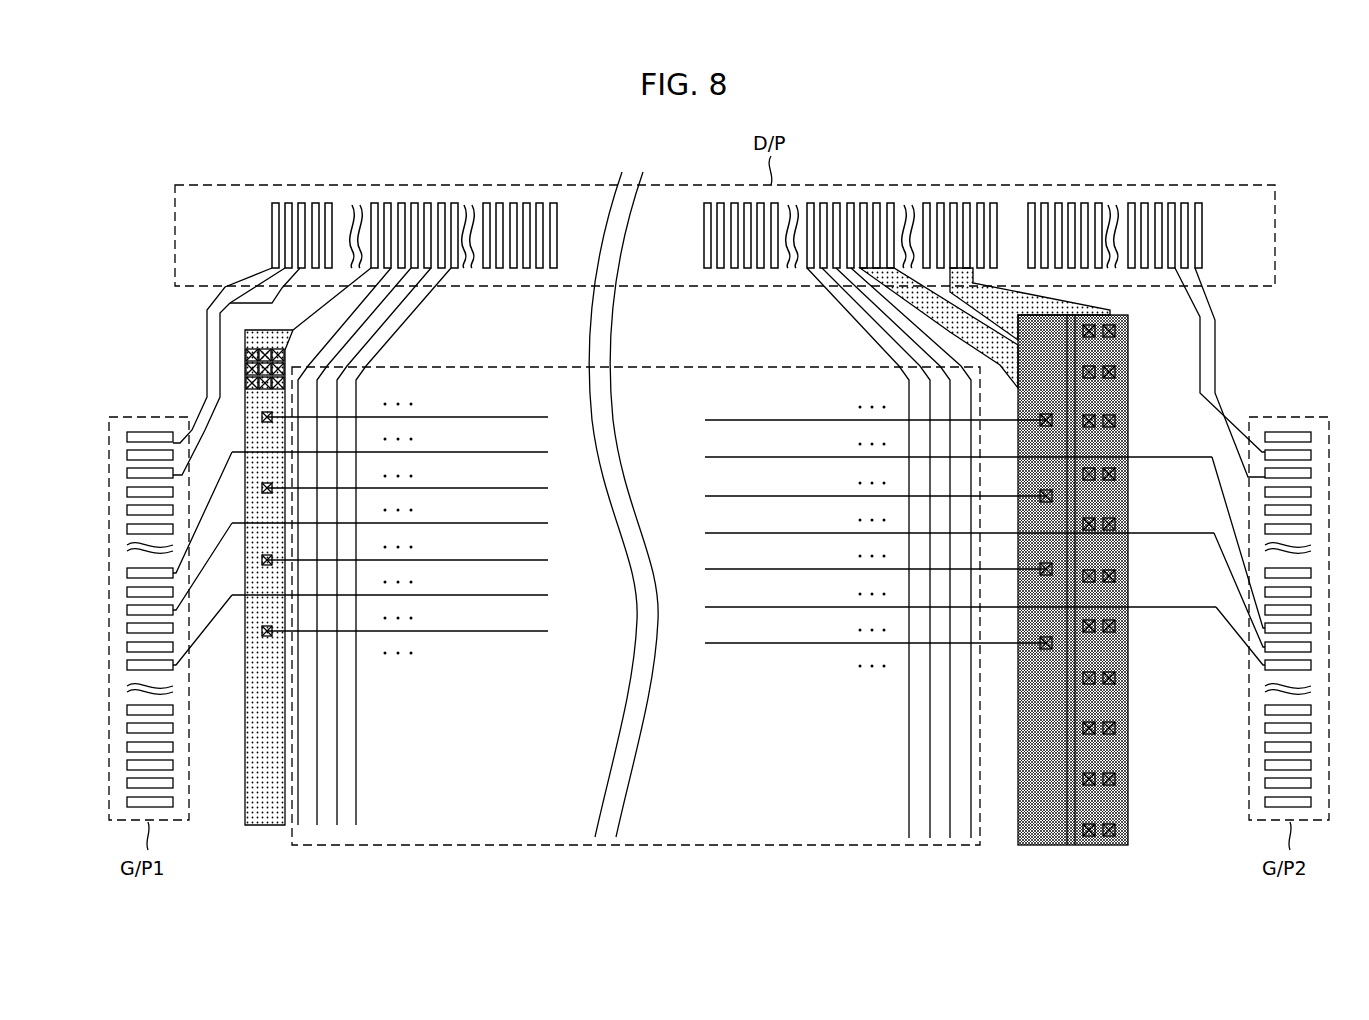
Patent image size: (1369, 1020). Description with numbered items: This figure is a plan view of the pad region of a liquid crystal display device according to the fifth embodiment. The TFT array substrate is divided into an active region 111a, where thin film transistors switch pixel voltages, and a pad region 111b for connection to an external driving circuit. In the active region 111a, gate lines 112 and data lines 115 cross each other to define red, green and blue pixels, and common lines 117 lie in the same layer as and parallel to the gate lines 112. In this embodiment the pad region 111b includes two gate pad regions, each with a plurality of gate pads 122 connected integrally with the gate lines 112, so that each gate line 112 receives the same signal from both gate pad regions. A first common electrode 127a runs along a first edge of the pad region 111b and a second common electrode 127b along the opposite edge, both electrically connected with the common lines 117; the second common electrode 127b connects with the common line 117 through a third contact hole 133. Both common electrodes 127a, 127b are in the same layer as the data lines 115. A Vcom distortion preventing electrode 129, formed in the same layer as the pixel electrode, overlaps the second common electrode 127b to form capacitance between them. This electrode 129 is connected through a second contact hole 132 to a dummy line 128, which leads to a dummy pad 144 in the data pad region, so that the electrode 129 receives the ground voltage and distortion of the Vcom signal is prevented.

The active region 111a is at (752, 832).
The pad region 111b is at (677, 312).
The gate line 112 is at (460, 523).
The data line 115 is at (337, 762).
The common line 117 is at (525, 563).
The gate pad 122 is at (127, 590).
The first common electrode 127a is at (263, 826).
The second common electrode 127b is at (1016, 818).
The dummy line 128 is at (1128, 345).
The Vcom distortion preventing electrode 129 is at (1118, 314).
The second contact hole 132 is at (1115, 372).
The third contact hole 133 is at (1052, 418).
The dummy pad 144 is at (966, 203).